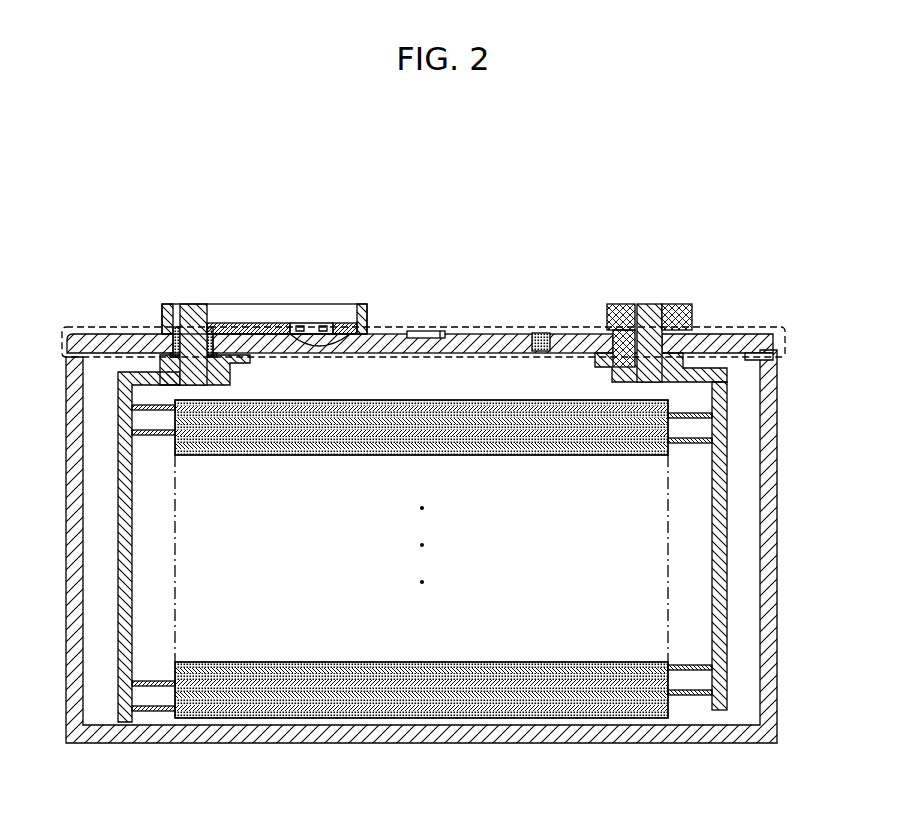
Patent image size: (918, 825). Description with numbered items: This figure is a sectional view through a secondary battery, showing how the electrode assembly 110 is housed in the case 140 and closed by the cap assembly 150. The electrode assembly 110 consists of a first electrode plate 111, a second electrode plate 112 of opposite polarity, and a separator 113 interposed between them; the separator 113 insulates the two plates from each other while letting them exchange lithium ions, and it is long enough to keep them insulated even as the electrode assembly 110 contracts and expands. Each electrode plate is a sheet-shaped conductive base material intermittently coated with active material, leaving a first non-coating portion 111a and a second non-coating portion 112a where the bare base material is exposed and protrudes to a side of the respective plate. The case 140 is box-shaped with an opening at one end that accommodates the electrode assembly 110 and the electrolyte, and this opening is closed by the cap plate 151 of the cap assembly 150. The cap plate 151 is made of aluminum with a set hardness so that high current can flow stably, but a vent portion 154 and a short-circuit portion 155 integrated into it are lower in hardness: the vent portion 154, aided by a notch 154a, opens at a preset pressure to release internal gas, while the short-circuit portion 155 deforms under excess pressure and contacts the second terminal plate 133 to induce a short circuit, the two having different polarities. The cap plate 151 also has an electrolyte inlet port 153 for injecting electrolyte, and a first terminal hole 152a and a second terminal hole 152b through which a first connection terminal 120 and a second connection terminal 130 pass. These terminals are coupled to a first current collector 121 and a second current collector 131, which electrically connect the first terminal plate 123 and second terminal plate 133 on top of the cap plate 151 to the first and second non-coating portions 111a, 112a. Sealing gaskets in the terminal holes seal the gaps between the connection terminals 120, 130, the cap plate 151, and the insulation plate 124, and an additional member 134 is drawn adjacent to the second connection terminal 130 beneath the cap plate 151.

The electrode assembly 110 is at (425, 604).
The first electrode plate 111 is at (607, 720).
The first non-coating portion 111a is at (700, 697).
The second electrode plate 112 is at (257, 705).
The second non-coating portion 112a is at (152, 700).
The separator 113 is at (432, 718).
The first connection terminal 120 is at (650, 305).
The first current collector 121 is at (717, 403).
The first terminal plate 123 is at (680, 305).
The insulation plate 124 is at (750, 363).
The second connection terminal 130 is at (188, 307).
The second current collector 131 is at (135, 377).
The second terminal plate 133 is at (267, 320).
The insulating nut member 134 is at (247, 363).
The case 140 is at (775, 548).
The cap assembly 150 is at (447, 280).
The cap plate 151 is at (378, 345).
The first terminal hole 152a is at (622, 310).
The second terminal hole 152b is at (165, 345).
The electrolyte inlet port 153 is at (537, 333).
The vent portion 154 is at (423, 328).
The notch 154a is at (440, 330).
The short-circuit portion 155 is at (313, 345).